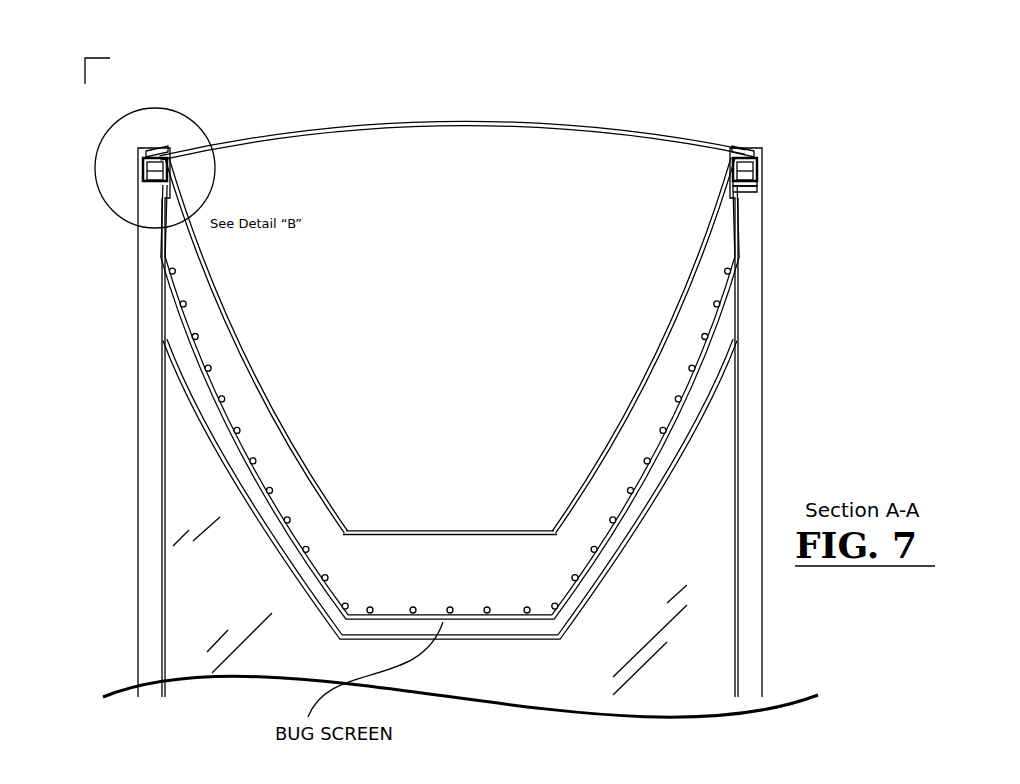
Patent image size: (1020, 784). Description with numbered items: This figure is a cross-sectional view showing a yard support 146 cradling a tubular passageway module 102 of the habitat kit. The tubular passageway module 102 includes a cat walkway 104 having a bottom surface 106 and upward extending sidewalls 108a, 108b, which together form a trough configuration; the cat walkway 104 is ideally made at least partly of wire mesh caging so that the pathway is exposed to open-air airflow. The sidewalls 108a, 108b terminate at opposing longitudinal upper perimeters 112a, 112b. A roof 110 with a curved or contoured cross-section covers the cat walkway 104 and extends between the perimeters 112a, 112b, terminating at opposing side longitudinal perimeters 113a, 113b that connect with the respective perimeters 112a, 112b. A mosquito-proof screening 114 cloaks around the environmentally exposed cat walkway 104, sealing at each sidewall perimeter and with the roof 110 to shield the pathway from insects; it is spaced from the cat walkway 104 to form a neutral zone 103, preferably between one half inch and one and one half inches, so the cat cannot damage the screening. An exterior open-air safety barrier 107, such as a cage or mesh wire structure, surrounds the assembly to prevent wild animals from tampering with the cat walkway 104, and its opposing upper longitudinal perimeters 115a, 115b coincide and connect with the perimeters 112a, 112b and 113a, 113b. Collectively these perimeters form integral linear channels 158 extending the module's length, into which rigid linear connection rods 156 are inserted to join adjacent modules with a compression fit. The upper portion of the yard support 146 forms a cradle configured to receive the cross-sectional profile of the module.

The tubular passageway module 102 is at (741, 114).
The neutral zone 103 is at (443, 573).
The cat walkway 104 is at (718, 253).
The bottom surface 106 is at (428, 530).
The exterior open-air safety barrier 107 is at (640, 510).
The upward extending sidewall 108a is at (234, 346).
The upward extending sidewall 108b is at (663, 347).
The roof 110 is at (661, 136).
The longitudinal upper perimeter 112a is at (141, 172).
The longitudinal upper perimeter 112b is at (757, 162).
The side longitudinal perimeter 113a is at (152, 156).
The side longitudinal perimeter 113b is at (750, 157).
The mosquito-proof screening 114 is at (718, 320).
The upper longitudinal perimeter 115a is at (167, 203).
The upper longitudinal perimeter 115b is at (758, 192).
The yard support 146 is at (792, 386).
The rigid linear connection rod 156 is at (757, 177).
The linear channel 158 is at (745, 190).